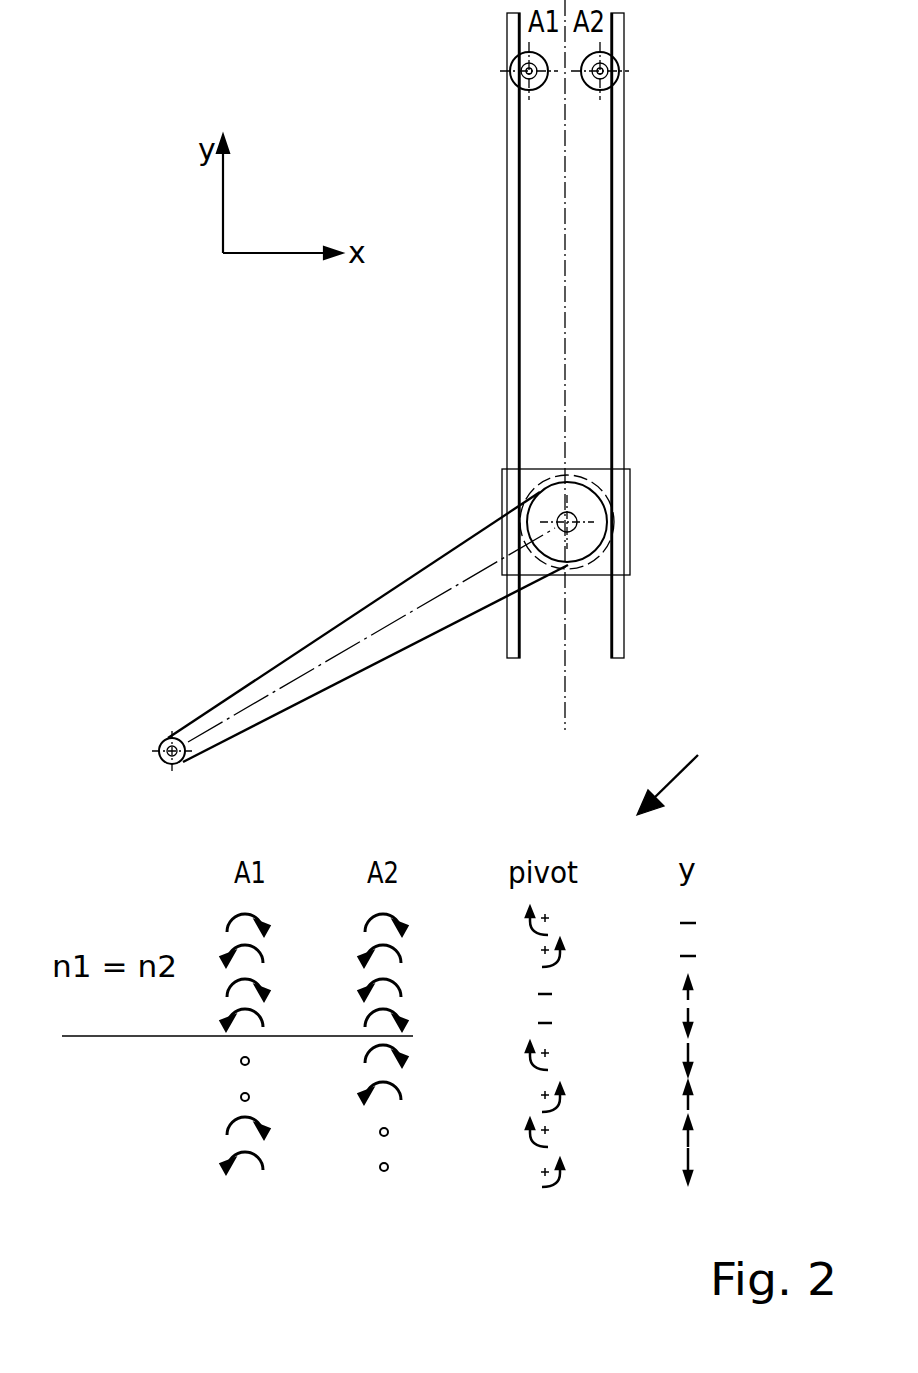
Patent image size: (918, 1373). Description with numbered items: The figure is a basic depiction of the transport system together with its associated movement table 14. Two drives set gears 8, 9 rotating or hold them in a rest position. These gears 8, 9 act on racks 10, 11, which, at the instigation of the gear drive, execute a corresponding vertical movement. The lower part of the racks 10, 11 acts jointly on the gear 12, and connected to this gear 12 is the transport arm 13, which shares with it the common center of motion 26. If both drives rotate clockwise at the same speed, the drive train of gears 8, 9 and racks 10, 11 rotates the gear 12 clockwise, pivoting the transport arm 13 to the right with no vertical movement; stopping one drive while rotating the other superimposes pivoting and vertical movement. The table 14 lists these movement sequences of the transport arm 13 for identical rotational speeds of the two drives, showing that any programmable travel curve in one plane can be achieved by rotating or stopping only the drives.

The gear 8 is at (515, 83).
The gear 9 is at (618, 83).
The rack 10 is at (517, 272).
The rack 11 is at (620, 308).
The gear 12 is at (580, 480).
The transport arm 13 is at (307, 688).
The table 14 is at (690, 783).
The common center of motion 26 is at (577, 525).